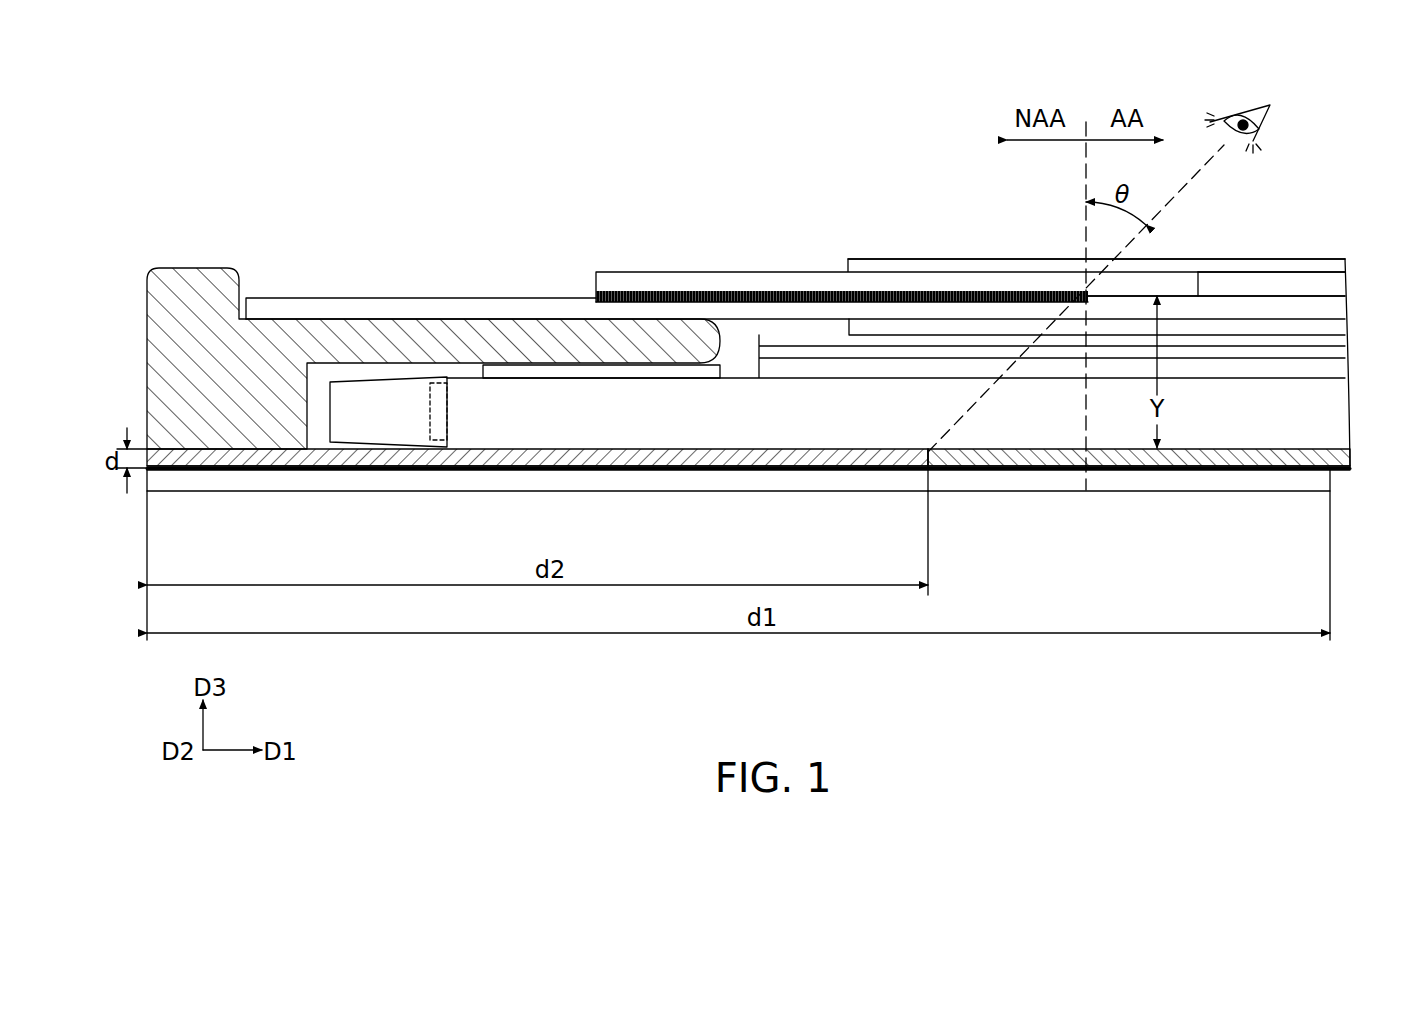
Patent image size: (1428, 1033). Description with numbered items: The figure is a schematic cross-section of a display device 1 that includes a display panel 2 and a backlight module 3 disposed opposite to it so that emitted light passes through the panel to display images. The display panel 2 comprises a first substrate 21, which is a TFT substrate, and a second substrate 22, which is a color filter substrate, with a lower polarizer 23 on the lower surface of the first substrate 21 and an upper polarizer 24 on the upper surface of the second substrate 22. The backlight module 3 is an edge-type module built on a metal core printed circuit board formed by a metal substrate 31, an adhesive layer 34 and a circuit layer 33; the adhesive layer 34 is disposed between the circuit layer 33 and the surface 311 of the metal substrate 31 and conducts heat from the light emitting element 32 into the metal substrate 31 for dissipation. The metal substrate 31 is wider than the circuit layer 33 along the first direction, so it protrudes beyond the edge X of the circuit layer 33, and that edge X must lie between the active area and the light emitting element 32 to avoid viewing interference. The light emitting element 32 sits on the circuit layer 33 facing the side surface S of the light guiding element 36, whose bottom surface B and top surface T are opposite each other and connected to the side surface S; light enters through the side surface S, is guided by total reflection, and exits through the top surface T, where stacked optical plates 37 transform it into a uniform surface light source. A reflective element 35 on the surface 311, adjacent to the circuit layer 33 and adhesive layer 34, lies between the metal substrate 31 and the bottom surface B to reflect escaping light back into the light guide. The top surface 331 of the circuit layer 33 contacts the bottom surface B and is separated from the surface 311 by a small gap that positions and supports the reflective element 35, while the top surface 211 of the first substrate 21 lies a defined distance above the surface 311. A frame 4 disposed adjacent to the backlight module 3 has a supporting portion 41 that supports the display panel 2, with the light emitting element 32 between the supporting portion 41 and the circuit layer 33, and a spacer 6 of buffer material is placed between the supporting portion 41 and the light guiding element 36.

The display device 1 is at (253, 110).
The display panel 2 is at (612, 268).
The backlight module 3 is at (440, 495).
The frame 4 is at (193, 287).
The spacer 6 is at (512, 370).
The first substrate 21 is at (1335, 305).
The second substrate 22 is at (1333, 283).
The polarizer 23 is at (1335, 325).
The polarizer 24 is at (1313, 266).
The metal substrate 31 is at (1322, 478).
The light emitting element 32 is at (383, 393).
The circuit layer 33 is at (615, 457).
The adhesive layer 34 is at (665, 468).
The reflective element 35 is at (775, 494).
The light guiding element 36 is at (1335, 410).
The optical plate 37 is at (1345, 333).
The supporting portion 41 is at (566, 330).
The top surface of the first substrate 211 is at (1198, 268).
The surface of the metal substrate 311 is at (865, 470).
The top surface of the circuit layer 331 is at (757, 457).
The top surface T is at (745, 378).
The side surface S is at (448, 423).
The edge of the circuit layer X is at (937, 458).
The bottom surface B is at (1232, 448).